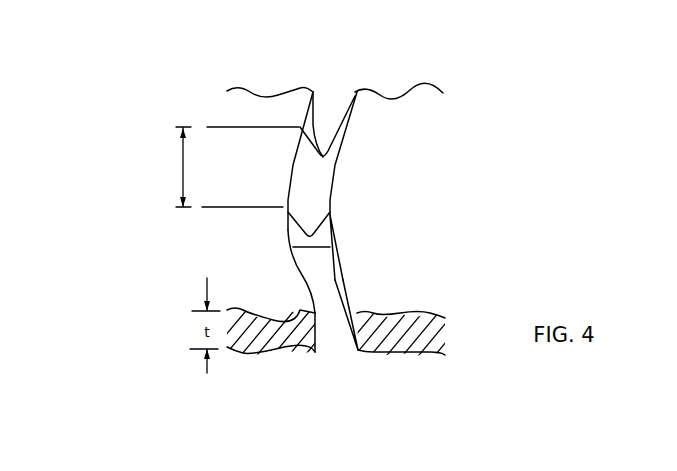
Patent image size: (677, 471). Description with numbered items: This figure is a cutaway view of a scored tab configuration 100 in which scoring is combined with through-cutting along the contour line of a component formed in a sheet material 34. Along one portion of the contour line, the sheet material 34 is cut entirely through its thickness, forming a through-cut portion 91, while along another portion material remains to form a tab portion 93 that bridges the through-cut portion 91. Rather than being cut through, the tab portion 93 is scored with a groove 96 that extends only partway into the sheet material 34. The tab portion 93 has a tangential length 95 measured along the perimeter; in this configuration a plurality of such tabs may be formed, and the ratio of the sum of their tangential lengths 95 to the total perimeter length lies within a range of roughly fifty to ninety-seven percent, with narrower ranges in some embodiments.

The scored tab configuration 100 is at (127, 82).
The sheet material 34 is at (380, 102).
The tangential length 95 is at (183, 163).
The groove 96 is at (303, 183).
The tab portion 93 is at (321, 238).
The through-cut portion 91 is at (322, 332).